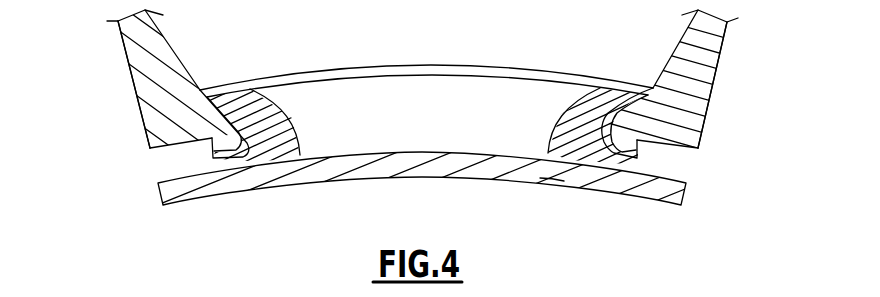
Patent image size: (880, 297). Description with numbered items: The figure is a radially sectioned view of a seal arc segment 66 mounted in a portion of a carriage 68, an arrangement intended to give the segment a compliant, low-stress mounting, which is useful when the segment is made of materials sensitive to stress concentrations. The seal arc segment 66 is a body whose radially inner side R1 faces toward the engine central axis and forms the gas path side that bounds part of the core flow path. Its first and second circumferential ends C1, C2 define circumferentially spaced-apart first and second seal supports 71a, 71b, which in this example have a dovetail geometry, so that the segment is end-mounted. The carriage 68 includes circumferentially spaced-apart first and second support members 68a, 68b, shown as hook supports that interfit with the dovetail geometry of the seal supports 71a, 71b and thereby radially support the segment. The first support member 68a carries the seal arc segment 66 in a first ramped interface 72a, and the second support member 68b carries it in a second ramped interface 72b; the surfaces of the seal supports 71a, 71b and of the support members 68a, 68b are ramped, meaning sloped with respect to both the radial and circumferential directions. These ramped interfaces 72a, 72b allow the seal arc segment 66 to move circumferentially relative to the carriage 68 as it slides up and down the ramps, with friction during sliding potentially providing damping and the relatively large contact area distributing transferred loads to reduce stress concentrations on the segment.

The seal arc segment 66 is at (253, 199).
The carriage 68 is at (116, 52).
The first support member 68a is at (715, 125).
The second support member 68b is at (129, 102).
The first seal support 71a is at (609, 158).
The second seal support 71b is at (236, 160).
The first ramped interface 72a is at (607, 102).
The second ramped interface 72b is at (237, 102).
The first circumferential end C1 is at (704, 180).
The second circumferential end C2 is at (142, 180).
The radially inner side R1 is at (556, 180).